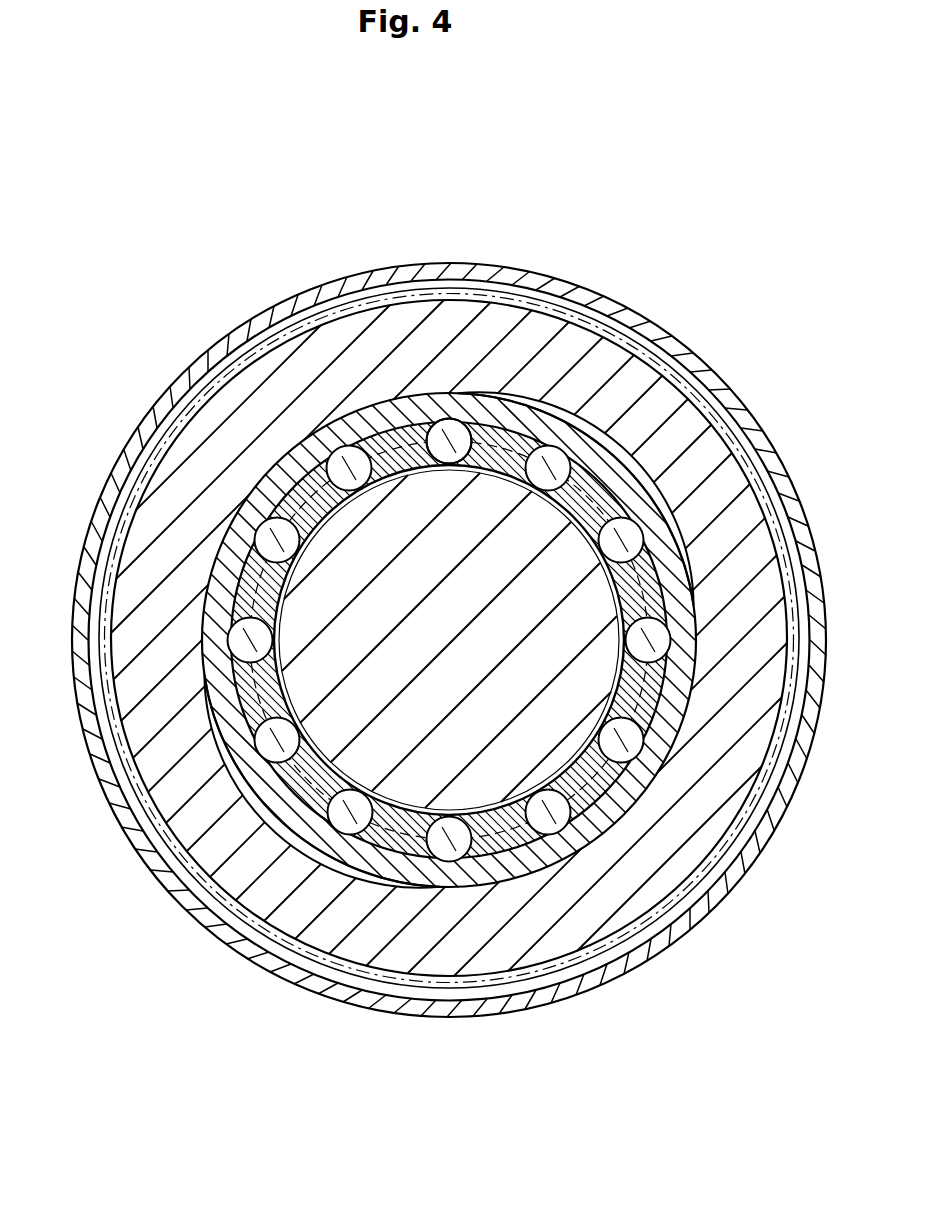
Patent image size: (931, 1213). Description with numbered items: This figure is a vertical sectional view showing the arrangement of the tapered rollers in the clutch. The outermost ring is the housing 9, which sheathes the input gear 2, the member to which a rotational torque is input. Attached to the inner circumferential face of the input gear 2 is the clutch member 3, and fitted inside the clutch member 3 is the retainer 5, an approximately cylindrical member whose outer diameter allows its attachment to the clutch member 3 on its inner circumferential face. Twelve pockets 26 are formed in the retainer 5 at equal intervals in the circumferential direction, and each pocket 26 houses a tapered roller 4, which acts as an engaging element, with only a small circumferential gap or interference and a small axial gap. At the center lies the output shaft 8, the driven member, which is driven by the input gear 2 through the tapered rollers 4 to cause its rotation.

The input gear 2 is at (400, 318).
The clutch member 3 is at (362, 402).
The tapered roller 4 is at (448, 452).
The retainer 5 is at (390, 463).
The output shaft 8 is at (458, 623).
The housing 9 is at (216, 330).
The pocket 26 is at (433, 425).